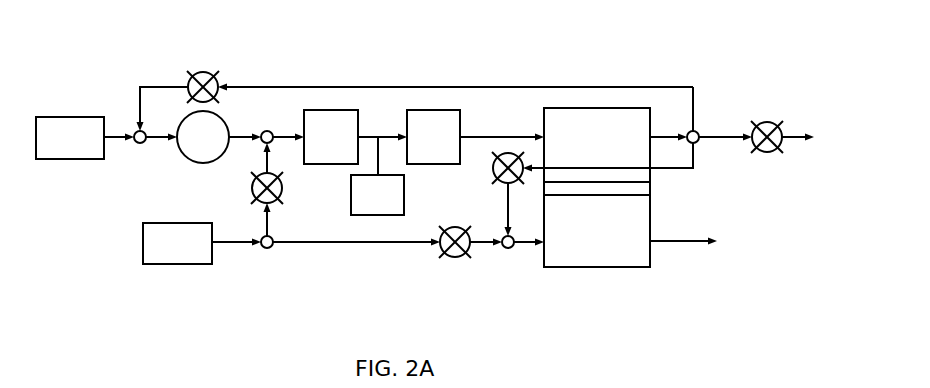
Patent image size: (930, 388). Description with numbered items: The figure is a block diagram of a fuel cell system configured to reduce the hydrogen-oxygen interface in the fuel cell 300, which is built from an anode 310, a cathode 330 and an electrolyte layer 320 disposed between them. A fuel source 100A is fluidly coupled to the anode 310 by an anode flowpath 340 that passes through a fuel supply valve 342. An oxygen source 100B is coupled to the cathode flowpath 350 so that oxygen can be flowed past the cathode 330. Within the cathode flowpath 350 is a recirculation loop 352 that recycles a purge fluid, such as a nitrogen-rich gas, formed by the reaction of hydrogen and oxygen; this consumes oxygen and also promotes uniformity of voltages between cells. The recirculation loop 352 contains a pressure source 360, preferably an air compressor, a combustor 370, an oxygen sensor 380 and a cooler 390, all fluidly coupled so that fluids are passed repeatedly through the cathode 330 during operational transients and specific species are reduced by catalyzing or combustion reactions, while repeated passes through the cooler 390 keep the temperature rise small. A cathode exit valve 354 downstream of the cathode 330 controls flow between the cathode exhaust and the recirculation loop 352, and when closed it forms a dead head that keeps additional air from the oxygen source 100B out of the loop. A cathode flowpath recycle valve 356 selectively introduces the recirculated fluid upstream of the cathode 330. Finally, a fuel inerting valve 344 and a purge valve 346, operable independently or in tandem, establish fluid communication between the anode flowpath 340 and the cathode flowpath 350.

The oxygen source 100B is at (99, 154).
The fuel source 100A is at (206, 259).
The fuel cell 300 is at (630, 207).
The anode 310 is at (645, 228).
The electrolyte layer 320 is at (650, 188).
The cathode 330 is at (600, 112).
The anode flowpath 340 is at (342, 244).
The fuel supply valve 342 is at (455, 258).
The fuel inerting valve 344 is at (252, 191).
The purge valve 346 is at (491, 173).
The cathode flowpath 350 is at (496, 84).
The recirculation loop 352 is at (673, 84).
The cathode exit valve 354 is at (768, 120).
The cathode flowpath recycle valve 356 is at (205, 70).
The pressure source 360 is at (192, 150).
The combustor 370 is at (352, 149).
The oxygen sensor 380 is at (398, 209).
The cooler 390 is at (454, 149).